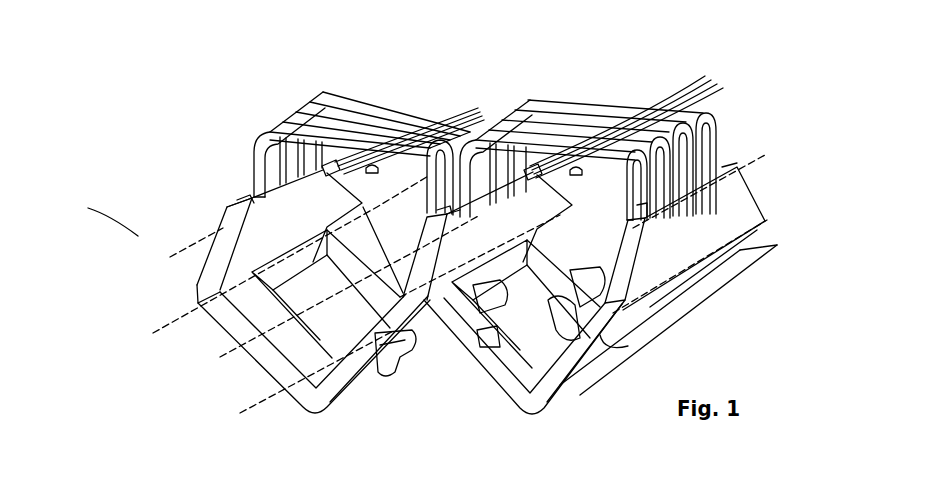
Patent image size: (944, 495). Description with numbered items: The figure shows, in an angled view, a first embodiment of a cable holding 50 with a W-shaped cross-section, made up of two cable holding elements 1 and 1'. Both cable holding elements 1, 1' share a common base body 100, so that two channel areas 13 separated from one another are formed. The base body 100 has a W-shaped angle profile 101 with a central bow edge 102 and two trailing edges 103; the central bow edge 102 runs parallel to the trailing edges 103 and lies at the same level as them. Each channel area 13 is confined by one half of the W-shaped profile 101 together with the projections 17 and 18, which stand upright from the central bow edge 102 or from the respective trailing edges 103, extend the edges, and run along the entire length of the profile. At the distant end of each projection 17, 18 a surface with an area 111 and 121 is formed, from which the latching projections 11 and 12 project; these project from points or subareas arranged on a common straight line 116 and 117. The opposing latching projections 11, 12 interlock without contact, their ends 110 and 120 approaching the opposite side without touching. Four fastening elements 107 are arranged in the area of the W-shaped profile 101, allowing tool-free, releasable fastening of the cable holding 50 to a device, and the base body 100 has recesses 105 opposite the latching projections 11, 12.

The cable holding element 1 is at (579, 112).
The cable holding element 1' is at (252, 107).
The latching projection 11 is at (703, 86).
The latching projection 12 is at (547, 123).
The channel area 13 is at (409, 197).
The projection 17 is at (320, 222).
The projection 18 is at (508, 230).
The cable holding 50 is at (143, 238).
The base body 100 is at (463, 397).
The W-shaped angle profile 101 is at (411, 349).
The central bow edge 102 is at (262, 402).
The trailing edge 103 is at (163, 325).
The recess 105 is at (362, 329).
The fastening element 107 is at (404, 368).
The end of latching projection 110 is at (331, 163).
The area 111 is at (442, 207).
The common straight line 116 is at (767, 150).
The common straight line 117 is at (177, 250).
The end of latching projection 120 is at (374, 168).
The area 121 is at (243, 197).